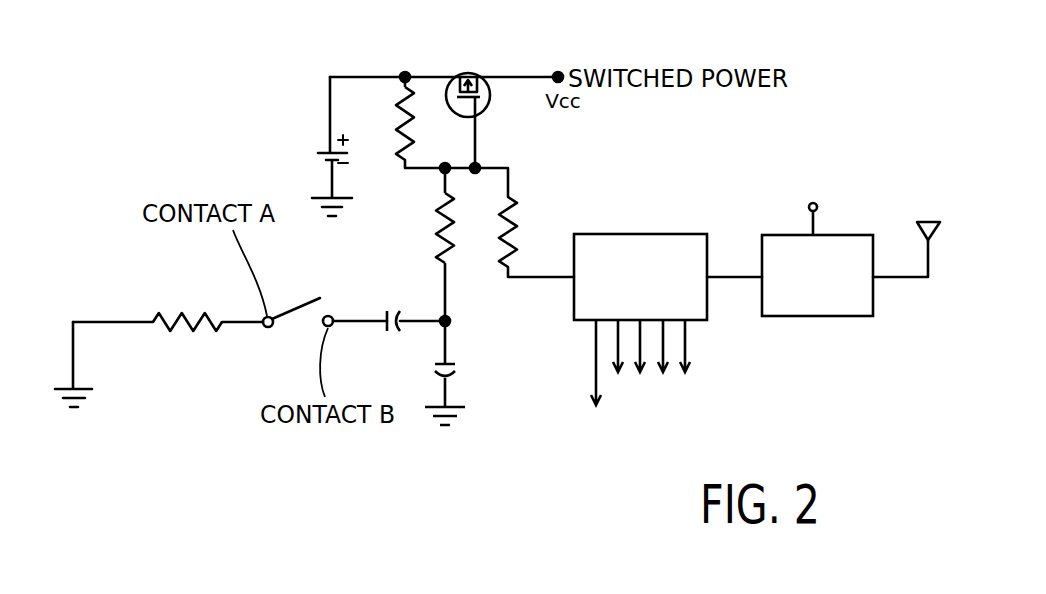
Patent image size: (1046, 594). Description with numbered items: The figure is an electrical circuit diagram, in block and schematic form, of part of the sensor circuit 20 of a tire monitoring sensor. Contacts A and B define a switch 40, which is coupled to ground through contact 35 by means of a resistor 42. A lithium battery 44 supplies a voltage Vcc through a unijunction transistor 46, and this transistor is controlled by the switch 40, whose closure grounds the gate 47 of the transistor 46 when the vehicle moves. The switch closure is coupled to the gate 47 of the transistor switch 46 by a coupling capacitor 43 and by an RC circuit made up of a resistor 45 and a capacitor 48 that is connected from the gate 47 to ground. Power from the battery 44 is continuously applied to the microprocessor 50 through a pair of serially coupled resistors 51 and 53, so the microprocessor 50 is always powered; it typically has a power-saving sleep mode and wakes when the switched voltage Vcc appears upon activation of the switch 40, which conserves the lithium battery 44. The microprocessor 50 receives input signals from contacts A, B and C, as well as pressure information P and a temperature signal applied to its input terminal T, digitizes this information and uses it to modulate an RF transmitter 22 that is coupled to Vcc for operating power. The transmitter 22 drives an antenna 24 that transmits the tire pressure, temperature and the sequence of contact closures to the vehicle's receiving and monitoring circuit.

The sensor circuit 20 is at (236, 156).
The RF transmitter 22 is at (817, 317).
The antenna 24 is at (920, 232).
The contact A 35 is at (268, 328).
The switch 40 is at (300, 307).
The resistor 42 is at (198, 312).
The coupling capacitor 43 is at (387, 326).
The lithium battery 44 is at (325, 151).
The resistor 45 is at (447, 262).
The unijunction transistor 46 is at (461, 73).
The gate 47 is at (477, 130).
The capacitor 48 is at (450, 363).
The microprocessor 50 is at (640, 232).
The resistor 51 is at (415, 100).
The resistor 53 is at (510, 199).